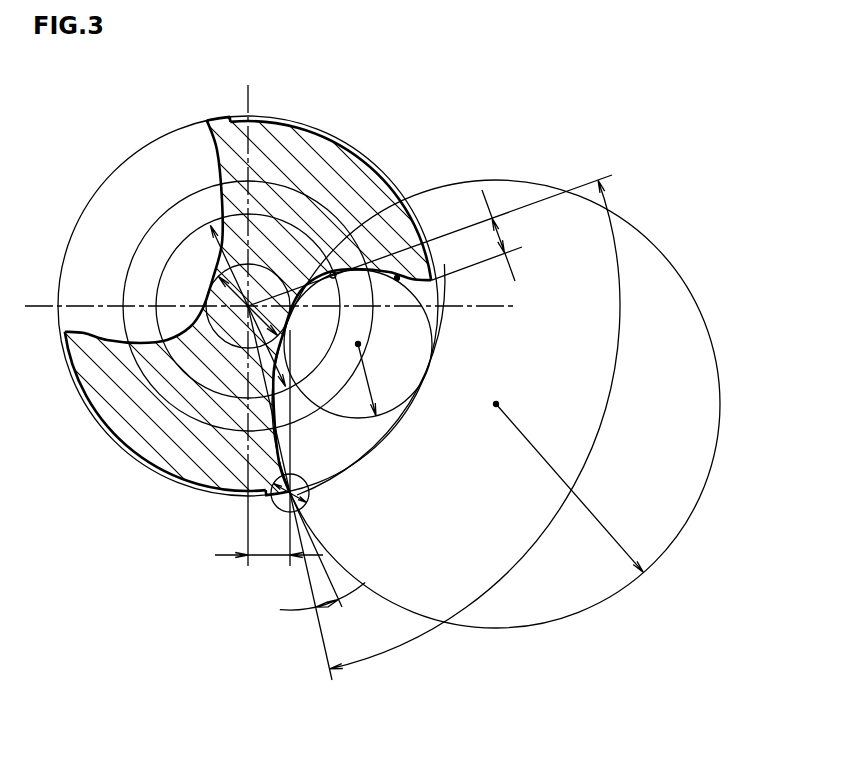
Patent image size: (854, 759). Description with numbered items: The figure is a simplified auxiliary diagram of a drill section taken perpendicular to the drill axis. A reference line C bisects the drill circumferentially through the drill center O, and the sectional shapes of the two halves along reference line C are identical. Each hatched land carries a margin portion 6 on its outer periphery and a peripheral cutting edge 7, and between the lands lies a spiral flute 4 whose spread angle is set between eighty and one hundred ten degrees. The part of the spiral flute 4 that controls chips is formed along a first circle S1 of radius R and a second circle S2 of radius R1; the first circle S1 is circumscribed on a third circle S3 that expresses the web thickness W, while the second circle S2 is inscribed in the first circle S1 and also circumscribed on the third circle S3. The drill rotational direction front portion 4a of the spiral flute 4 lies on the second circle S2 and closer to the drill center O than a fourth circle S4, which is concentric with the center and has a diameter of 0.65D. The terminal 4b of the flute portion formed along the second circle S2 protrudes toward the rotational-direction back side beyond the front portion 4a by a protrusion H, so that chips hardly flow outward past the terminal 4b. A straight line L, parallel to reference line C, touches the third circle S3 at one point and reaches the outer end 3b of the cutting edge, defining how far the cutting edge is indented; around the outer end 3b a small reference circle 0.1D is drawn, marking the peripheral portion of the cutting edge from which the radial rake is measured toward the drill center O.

The peripheral cutting edge 7 is at (206, 119).
The margin portion 6 is at (220, 117).
The reference line C is at (246, 313).
The drill center O is at (248, 306).
The drill rotational direction front portion 4a is at (333, 272).
The terminal of portion of spiral flute formed along second circle 4b is at (397, 278).
The spiral flute 4 is at (293, 452).
The outer end of cutting edge 3b is at (266, 496).
The straight line parallel to reference line L is at (293, 432).
The first circle S1 is at (688, 517).
The second circle S2 is at (443, 320).
The third circle S3 is at (175, 360).
The fourth circle S4 is at (173, 408).
The radius of second circle R1 is at (358, 344).
The radius of first circle R is at (570, 488).
The protrusion of terminal 4b from drill rotational direction front portion H is at (501, 235).
The web thickness W is at (216, 279).
The diameter of fourth circle 0.65D is at (208, 222).
The 0.1D circle 0.1D is at (305, 500).